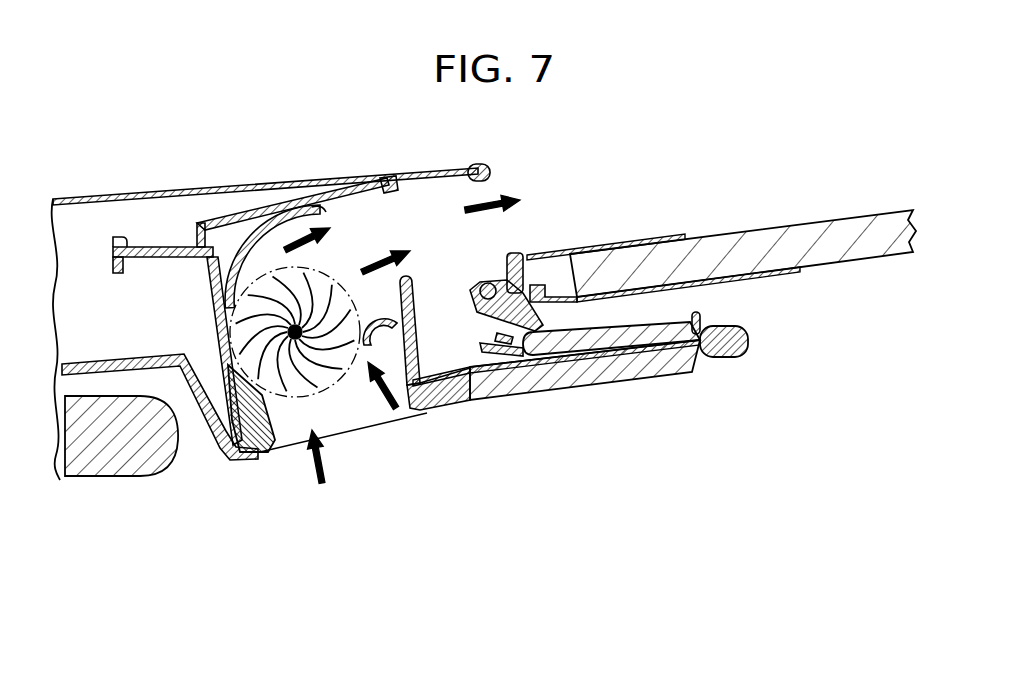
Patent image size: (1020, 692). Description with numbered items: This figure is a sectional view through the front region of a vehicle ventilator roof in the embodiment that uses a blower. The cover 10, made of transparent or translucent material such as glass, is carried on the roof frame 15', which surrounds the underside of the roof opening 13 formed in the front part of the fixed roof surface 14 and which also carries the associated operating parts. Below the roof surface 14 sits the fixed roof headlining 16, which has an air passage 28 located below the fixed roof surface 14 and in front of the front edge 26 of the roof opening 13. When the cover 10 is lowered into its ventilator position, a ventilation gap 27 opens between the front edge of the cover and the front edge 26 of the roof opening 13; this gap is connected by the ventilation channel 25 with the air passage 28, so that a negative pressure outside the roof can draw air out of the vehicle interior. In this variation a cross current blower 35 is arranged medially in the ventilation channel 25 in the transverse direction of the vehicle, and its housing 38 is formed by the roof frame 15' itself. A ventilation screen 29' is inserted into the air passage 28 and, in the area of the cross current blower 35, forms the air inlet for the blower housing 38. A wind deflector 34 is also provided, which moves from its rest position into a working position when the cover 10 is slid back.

The cover 10 is at (846, 240).
The roof opening 13 is at (622, 184).
The fixed roof surface 14 is at (128, 197).
The roof frame 15' is at (177, 280).
The fixed roof headlining 16 is at (580, 373).
The ventilation channel 25 is at (359, 240).
The front edge of roof opening 26 is at (486, 163).
The ventilation gap 27 is at (497, 224).
The air passage 28 is at (353, 423).
The ventilation screen 29' is at (168, 447).
The wind deflector 34 is at (632, 330).
The cross current blower 35 is at (293, 372).
The blower housing 38 is at (272, 237).